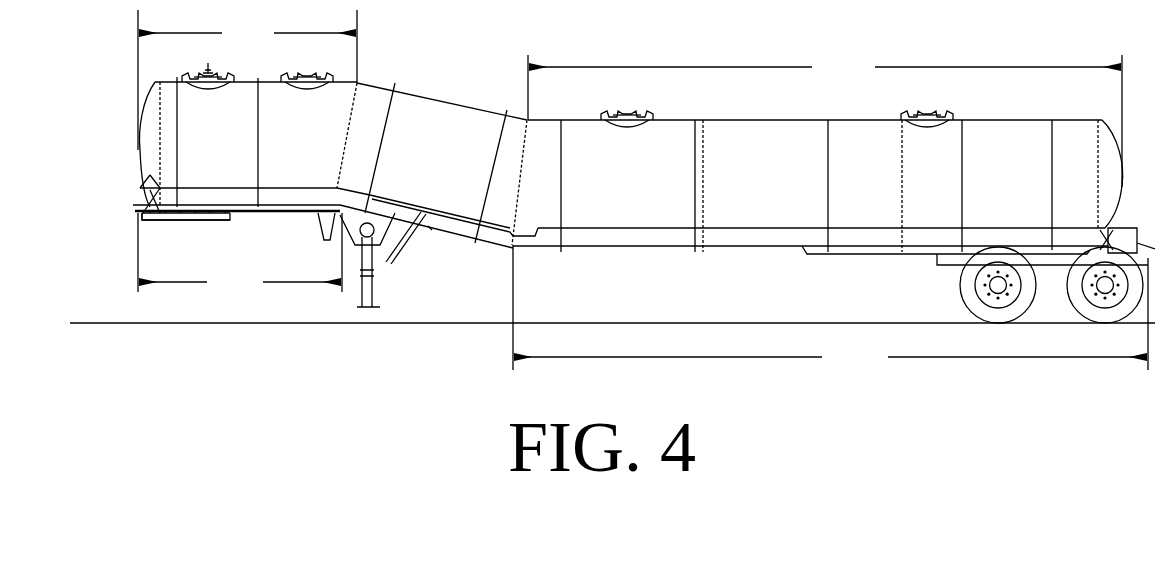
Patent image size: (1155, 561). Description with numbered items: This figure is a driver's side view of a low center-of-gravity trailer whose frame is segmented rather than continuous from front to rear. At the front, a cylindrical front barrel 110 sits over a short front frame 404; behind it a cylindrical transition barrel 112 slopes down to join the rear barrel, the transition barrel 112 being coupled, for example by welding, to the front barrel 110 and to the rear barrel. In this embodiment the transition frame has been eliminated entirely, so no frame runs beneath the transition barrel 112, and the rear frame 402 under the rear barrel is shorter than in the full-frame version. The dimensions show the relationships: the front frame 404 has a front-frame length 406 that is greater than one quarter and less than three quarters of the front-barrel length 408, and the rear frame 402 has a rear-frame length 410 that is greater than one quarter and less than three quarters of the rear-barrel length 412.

The front barrel 110 is at (278, 147).
The transition barrel 112 is at (462, 161).
The rear frame 402 is at (838, 254).
The front frame 404 is at (277, 215).
The front-frame length 406 is at (240, 253).
The front-barrel length 408 is at (247, 80).
The rear-frame length 410 is at (830, 307).
The rear-barrel length 412 is at (825, 121).